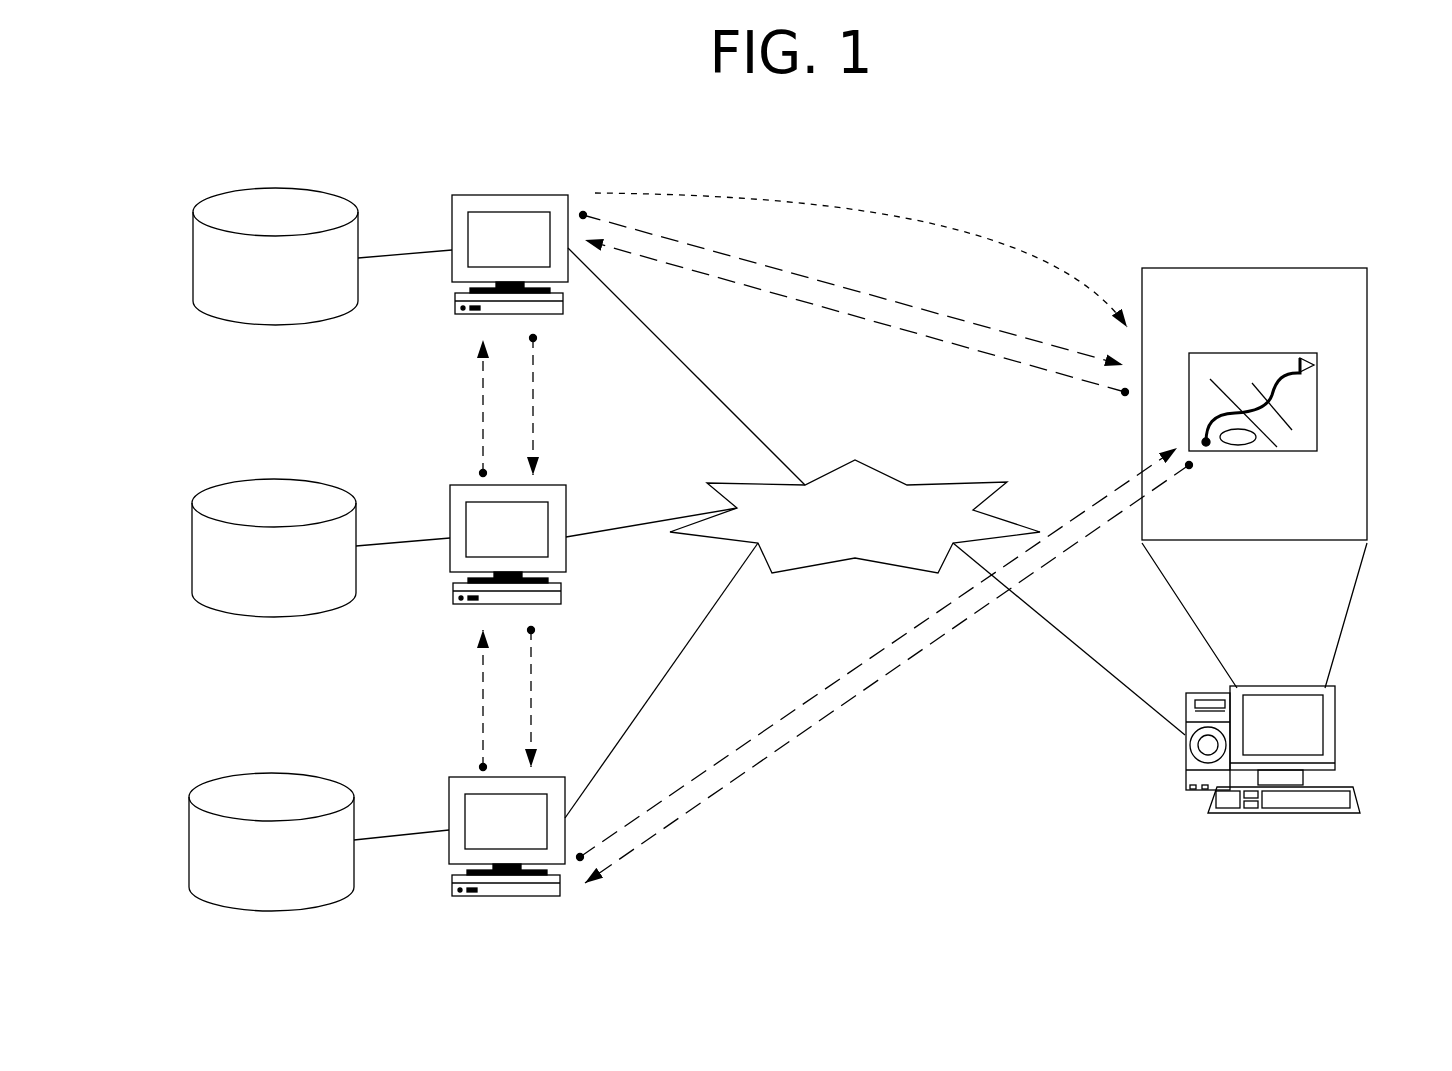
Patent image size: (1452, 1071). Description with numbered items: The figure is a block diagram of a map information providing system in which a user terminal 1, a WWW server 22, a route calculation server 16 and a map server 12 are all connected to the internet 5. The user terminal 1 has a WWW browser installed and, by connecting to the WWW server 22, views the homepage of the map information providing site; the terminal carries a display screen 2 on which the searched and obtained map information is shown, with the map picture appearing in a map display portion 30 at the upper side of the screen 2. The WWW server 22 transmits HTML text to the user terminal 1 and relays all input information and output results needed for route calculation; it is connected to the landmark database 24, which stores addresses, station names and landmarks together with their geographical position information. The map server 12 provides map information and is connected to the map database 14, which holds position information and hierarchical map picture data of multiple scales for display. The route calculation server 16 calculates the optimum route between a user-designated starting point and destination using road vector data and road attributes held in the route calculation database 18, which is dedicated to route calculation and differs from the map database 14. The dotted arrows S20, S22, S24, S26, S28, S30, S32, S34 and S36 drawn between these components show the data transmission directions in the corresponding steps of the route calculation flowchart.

The user terminal 1 is at (1337, 734).
The display screen 2 is at (1367, 317).
The internet 5 is at (927, 484).
The map server 12 is at (447, 785).
The map database 14 is at (189, 840).
The route calculation server 16 is at (448, 493).
The route calculation database 18 is at (192, 548).
The WWW server 22 is at (450, 203).
The landmark database 24 is at (193, 258).
The map display portion 30 is at (1318, 404).
The step S20 is at (861, 256).
The step S22 is at (852, 289).
The step S24 is at (563, 405).
The step S26 is at (453, 408).
The step S28 is at (857, 318).
The step S30 is at (889, 673).
The step S32 is at (453, 700).
The step S34 is at (562, 697).
The step S36 is at (877, 654).